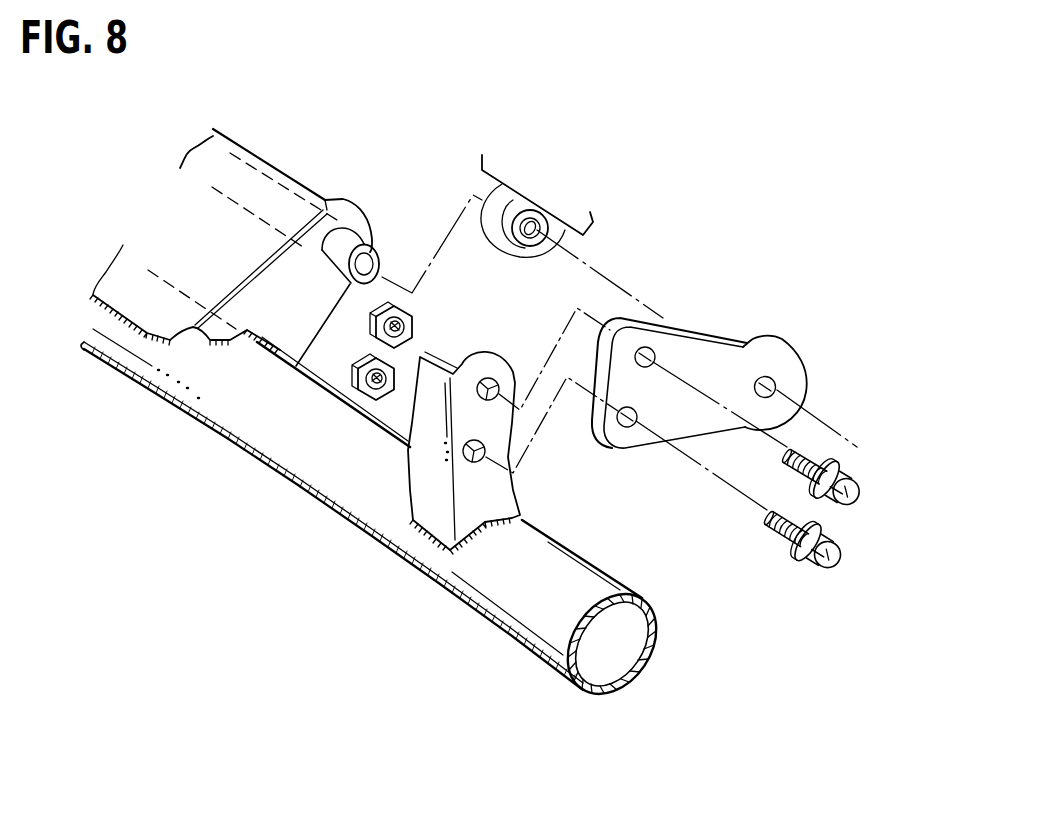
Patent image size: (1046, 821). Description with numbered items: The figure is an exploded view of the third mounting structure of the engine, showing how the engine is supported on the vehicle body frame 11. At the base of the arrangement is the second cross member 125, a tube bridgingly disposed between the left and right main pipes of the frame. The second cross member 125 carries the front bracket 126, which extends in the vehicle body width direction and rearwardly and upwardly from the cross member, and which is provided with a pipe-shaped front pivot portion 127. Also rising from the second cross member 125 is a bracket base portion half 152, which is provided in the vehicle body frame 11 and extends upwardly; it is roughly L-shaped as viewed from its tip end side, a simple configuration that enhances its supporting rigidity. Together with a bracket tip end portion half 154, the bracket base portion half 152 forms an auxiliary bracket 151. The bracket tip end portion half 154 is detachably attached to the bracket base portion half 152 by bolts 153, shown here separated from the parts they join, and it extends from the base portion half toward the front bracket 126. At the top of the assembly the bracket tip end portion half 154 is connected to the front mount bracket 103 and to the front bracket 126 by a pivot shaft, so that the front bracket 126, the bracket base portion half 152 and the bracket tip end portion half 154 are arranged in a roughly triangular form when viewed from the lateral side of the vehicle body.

The vehicle body frame 11 is at (148, 390).
The second cross member 125 is at (236, 428).
The front bracket 126 is at (218, 153).
The front pivot portion 127 is at (343, 243).
The front mount bracket 103 is at (511, 212).
The auxiliary bracket 151 is at (788, 192).
The bracket base portion half 152 is at (497, 368).
The bolt 153 is at (832, 563).
The bracket tip end portion half 154 is at (698, 352).